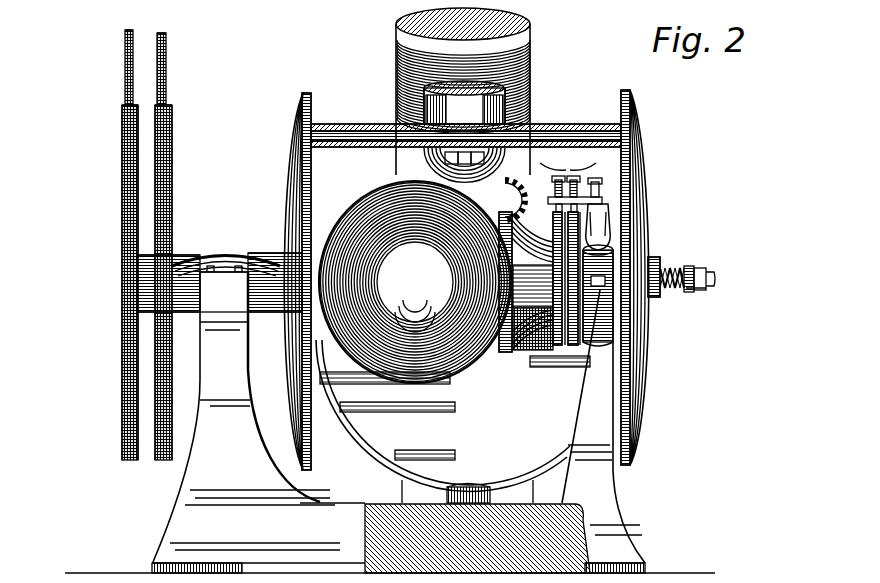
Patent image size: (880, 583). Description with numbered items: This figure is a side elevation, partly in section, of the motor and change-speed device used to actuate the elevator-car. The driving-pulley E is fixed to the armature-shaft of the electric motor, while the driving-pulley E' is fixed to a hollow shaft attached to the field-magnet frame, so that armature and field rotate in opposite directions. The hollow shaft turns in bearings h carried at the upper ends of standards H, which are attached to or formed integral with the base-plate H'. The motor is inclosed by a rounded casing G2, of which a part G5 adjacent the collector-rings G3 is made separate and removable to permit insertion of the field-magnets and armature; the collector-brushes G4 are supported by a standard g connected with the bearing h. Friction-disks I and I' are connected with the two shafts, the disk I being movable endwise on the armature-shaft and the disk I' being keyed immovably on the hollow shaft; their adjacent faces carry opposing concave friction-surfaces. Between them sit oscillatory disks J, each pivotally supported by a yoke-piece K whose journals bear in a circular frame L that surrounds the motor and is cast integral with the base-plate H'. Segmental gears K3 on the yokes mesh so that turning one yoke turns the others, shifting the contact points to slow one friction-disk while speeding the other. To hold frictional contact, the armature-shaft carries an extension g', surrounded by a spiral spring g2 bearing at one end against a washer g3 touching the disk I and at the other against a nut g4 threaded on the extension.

The driving-pulley E is at (111, 245).
The driving-pulley E' is at (156, 264).
The bearing h is at (238, 252).
The standard H is at (390, 422).
The base-plate H' is at (451, 538).
The friction-disk I is at (651, 277).
The friction-disk I' is at (269, 281).
The circular frame L is at (530, 30).
The yoke-piece K is at (505, 93).
The segmental gear K3 is at (512, 196).
The oscillatory disk J is at (545, 132).
The motor-casing G2 is at (415, 282).
The separable casing part G5 is at (516, 256).
The collector-rings G3 is at (557, 262).
The collector-brushes G4 is at (574, 212).
The standard g is at (629, 214).
The shaft extension g' is at (687, 306).
The spiral spring g2 is at (672, 266).
The washer g3 is at (656, 258).
The nut g4 is at (696, 267).